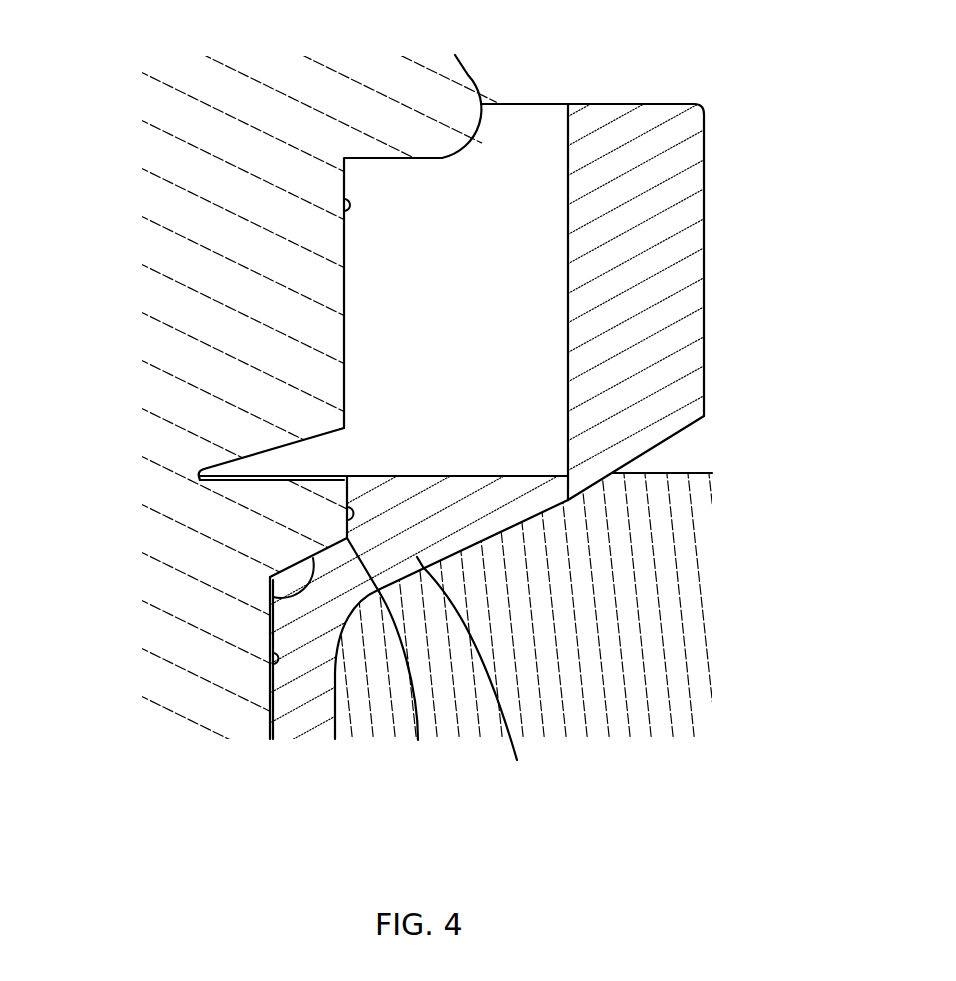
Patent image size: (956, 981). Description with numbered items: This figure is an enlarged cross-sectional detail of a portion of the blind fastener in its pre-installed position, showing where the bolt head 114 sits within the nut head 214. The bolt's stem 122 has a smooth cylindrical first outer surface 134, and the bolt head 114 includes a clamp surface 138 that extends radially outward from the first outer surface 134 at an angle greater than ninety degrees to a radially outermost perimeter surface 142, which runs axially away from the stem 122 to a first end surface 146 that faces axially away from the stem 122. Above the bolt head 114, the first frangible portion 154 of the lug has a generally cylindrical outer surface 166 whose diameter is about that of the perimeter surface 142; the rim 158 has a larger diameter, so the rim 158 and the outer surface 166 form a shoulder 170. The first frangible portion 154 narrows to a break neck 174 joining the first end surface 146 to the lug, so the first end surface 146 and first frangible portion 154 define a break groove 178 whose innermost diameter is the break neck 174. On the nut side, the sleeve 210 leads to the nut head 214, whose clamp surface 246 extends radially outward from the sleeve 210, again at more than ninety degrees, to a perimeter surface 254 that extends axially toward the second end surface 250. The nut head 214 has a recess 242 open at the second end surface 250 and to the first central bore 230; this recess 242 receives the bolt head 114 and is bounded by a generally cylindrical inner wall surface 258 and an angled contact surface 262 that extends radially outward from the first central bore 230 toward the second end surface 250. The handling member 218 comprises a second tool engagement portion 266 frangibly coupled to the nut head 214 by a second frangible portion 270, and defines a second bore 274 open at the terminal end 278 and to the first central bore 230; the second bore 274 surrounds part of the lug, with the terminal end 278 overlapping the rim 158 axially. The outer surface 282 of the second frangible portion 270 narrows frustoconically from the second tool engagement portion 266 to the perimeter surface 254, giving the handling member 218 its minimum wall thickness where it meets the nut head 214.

The bolt head 114 is at (305, 528).
The stem 122 is at (190, 690).
The first outer surface 134 is at (274, 657).
The clamp surface 138 is at (272, 597).
The perimeter surface 142 is at (344, 513).
The first end surface 146 is at (223, 476).
The first frangible portion 154 is at (293, 245).
The rim 158 is at (468, 75).
The outer surface 166 is at (343, 200).
The shoulder 170 is at (385, 158).
The break neck 174 is at (198, 476).
The break groove 178 is at (273, 445).
The sleeve 210 is at (306, 720).
The nut head 214 is at (517, 760).
The handling member 218 is at (597, 120).
The first central bore 230 is at (270, 719).
The recess 242 is at (418, 740).
The clamp surface 246 is at (490, 538).
The second end surface 250 is at (543, 475).
The perimeter surface 254 is at (568, 485).
The inner wall surface 258 is at (347, 477).
The contact surface 262 is at (313, 558).
The second tool engagement portion 266 is at (705, 197).
The second frangible portion 270 is at (583, 459).
The second bore 274 is at (568, 298).
The terminal end 278 is at (673, 104).
The outer surface 282 is at (683, 430).